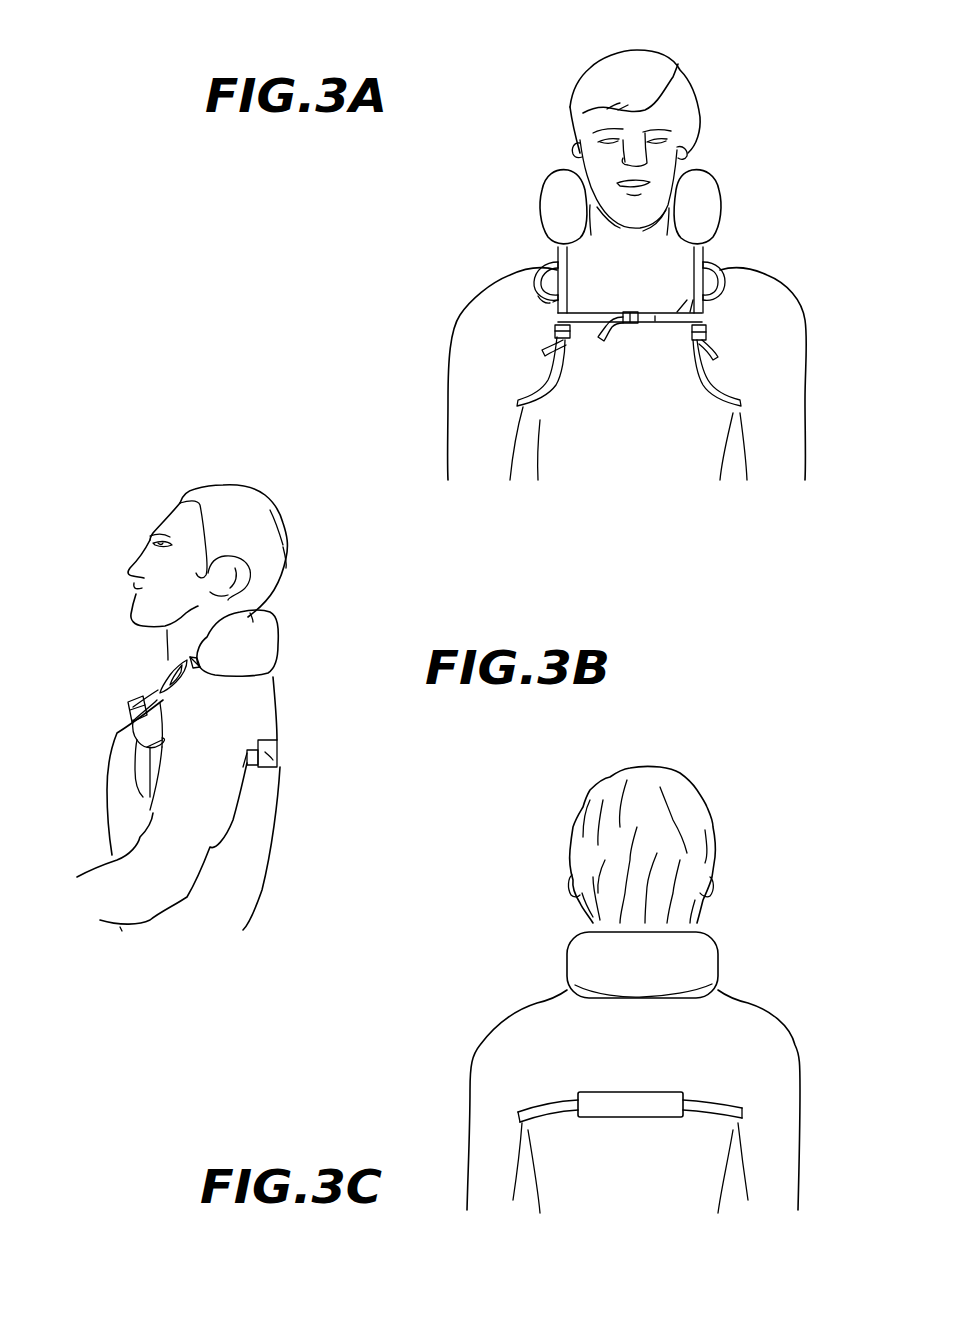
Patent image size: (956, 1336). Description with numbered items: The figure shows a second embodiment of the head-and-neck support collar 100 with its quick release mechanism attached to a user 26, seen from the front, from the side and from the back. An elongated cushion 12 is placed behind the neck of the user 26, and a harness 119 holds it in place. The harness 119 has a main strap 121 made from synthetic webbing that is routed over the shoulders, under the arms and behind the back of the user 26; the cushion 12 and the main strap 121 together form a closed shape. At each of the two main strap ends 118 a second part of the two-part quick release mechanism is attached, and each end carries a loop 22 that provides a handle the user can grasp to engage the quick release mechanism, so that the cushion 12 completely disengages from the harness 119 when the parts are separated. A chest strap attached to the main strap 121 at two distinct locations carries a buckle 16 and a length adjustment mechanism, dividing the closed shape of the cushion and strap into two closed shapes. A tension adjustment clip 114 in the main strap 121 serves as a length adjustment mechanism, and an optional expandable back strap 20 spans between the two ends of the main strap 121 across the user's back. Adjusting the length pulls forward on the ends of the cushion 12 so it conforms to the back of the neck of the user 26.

In FIG. 3A, the neck and head support collar 100 is at (768, 103).
In FIG. 3B, the neck and head support collar 100 is at (123, 472).
In FIG. 3C, the neck and head support collar 100 is at (760, 888).
In FIG. 3A, the elongated cushion 12 is at (707, 207).
In FIG. 3B, the elongated cushion 12 is at (280, 643).
In FIG. 3C, the elongated cushion 12 is at (707, 953).
In FIG. 3A, the buckle 16 is at (632, 328).
In FIG. 3B, the expandable back strap 20 is at (278, 770).
In FIG. 3C, the expandable back strap 20 is at (637, 1107).
In FIG. 3A, the loop 22 is at (540, 263).
In FIG. 3B, the loop 22 is at (172, 668).
In FIG. 3A, the user 26 is at (568, 105).
In FIG. 3B, the user 26 is at (288, 525).
In FIG. 3C, the user 26 is at (580, 850).
In FIG. 3A, the tension adjustment clip 114 is at (548, 332).
In FIG. 3A, the main strap ends 118 is at (710, 300).
In FIG. 3B, the main strap ends 118 is at (150, 695).
In FIG. 3A, the harness 119 is at (543, 388).
In FIG. 3A, the main strap 121 is at (705, 393).
In FIG. 3B, the main strap 121 is at (240, 790).
In FIG. 3C, the main strap 121 is at (543, 1102).